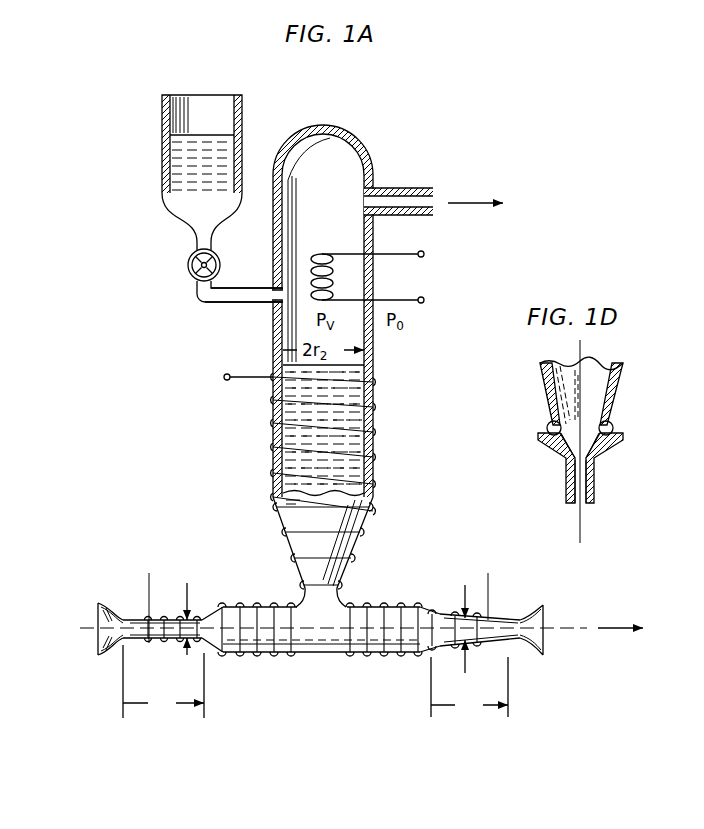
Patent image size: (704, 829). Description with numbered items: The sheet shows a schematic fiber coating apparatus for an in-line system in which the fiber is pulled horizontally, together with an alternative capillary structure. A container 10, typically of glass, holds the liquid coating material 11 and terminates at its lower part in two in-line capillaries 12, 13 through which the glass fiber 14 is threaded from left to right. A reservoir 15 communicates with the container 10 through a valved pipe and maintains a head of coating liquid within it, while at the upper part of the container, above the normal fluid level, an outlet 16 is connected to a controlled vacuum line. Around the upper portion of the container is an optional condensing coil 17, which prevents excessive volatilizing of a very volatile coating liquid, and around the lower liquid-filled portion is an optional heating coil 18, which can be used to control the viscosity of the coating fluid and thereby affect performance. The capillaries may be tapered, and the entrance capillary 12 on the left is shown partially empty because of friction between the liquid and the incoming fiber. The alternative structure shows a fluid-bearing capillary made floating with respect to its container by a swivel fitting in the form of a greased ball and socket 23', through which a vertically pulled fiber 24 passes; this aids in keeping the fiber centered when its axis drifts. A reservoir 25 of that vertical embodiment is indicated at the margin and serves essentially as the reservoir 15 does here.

In FIG. 1A, the container 10 is at (373, 452).
In FIG. 1A, the liquid coating material 11 is at (352, 420).
In FIG. 1A, the entrance capillary 12 is at (171, 641).
In FIG. 1A, the exit capillary 13 is at (502, 641).
In FIG. 1A, the glass fiber 14 is at (572, 630).
In FIG. 1A, the reservoir 15 is at (172, 158).
In FIG. 1A, the outlet 16 is at (404, 188).
In FIG. 1A, the condensing coil 17 is at (326, 254).
In FIG. 1A, the heating coil 18 is at (373, 410).
In FIG. 1A, the reservoir 25 is at (700, 268).
In FIG. 1D, the greased ball and socket 23' is at (603, 430).
In FIG. 1D, the vertically pulled fiber 24 is at (582, 521).